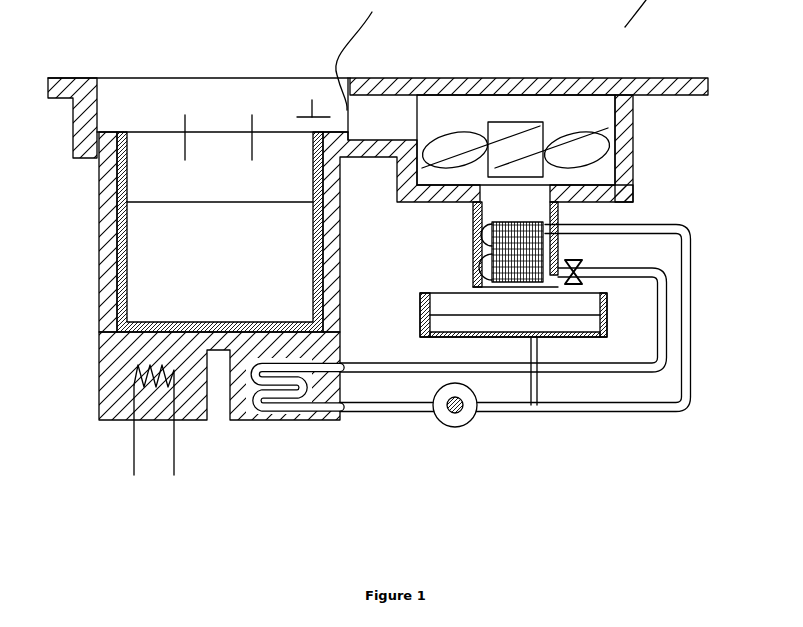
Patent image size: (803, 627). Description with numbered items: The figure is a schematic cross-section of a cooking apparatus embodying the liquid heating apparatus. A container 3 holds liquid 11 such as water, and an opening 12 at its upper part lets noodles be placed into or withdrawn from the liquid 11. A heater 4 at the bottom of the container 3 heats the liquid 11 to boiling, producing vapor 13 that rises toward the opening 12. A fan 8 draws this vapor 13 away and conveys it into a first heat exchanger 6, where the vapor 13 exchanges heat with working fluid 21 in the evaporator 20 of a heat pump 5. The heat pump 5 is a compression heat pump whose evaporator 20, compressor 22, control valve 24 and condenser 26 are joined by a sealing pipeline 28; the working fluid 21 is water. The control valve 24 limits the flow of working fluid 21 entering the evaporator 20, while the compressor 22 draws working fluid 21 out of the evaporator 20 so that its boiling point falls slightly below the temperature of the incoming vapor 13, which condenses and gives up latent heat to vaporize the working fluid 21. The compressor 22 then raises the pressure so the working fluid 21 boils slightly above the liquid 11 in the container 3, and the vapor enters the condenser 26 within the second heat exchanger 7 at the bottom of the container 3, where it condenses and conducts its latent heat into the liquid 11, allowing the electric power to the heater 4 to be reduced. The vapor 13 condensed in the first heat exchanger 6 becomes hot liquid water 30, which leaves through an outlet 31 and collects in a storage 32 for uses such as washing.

The container 3 is at (99, 280).
The heater 4 is at (134, 445).
The heat pump 5 is at (665, 222).
The first heat exchanger 6 is at (472, 243).
The second heat exchanger 7 is at (312, 430).
The fan 8 is at (515, 125).
The liquid 11 is at (117, 235).
The opening 12 is at (150, 145).
The vapor 13 is at (312, 100).
The evaporator 20 is at (557, 247).
The working fluid 21 is at (625, 222).
The compressor 22 is at (457, 428).
The control valve 24 is at (584, 278).
The condenser 26 is at (282, 418).
The sealing pipeline 28 is at (650, 415).
The liquid water 30 is at (537, 413).
The outlet 31 is at (478, 290).
The storage 32 is at (607, 326).